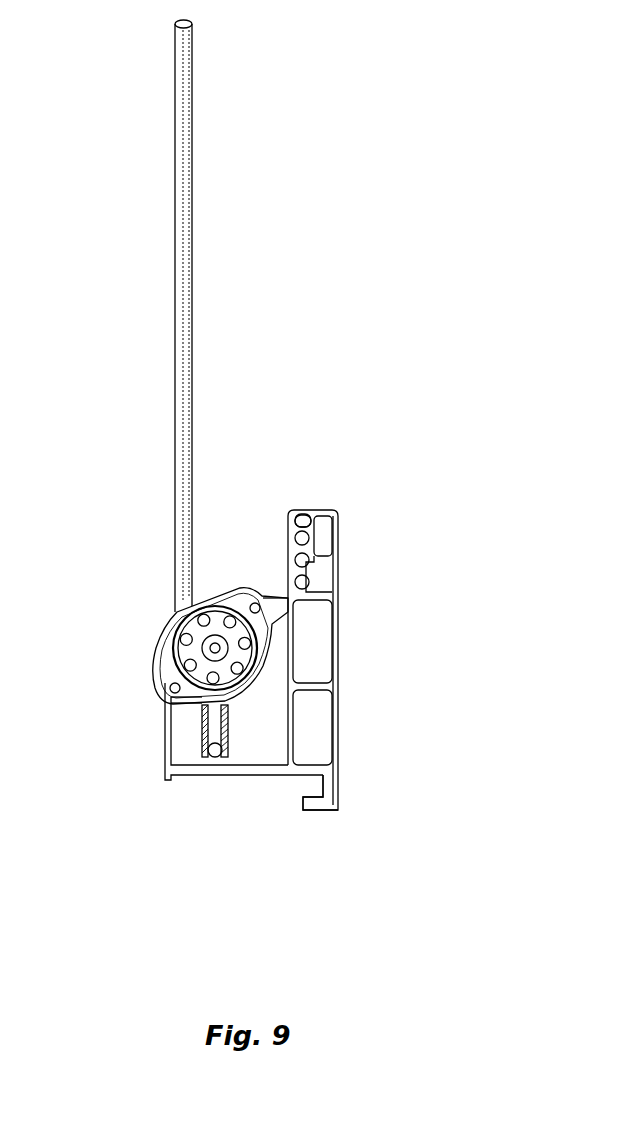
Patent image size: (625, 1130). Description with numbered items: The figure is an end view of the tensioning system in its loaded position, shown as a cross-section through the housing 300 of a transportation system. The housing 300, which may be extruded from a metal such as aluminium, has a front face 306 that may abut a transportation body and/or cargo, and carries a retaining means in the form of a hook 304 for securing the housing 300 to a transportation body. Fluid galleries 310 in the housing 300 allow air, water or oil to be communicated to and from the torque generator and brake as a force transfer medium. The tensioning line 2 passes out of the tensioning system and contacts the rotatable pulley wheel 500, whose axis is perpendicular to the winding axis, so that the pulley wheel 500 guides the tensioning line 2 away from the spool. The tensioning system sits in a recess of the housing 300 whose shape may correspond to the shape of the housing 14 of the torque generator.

The tensioning line 2 is at (166, 64).
The housing of the torque generator 14 is at (262, 621).
The housing 300 is at (343, 610).
The hook 304 is at (296, 809).
The front face 306 is at (156, 727).
The fluid galleries 310 is at (311, 523).
The rotatable pulley wheel 500 is at (192, 735).